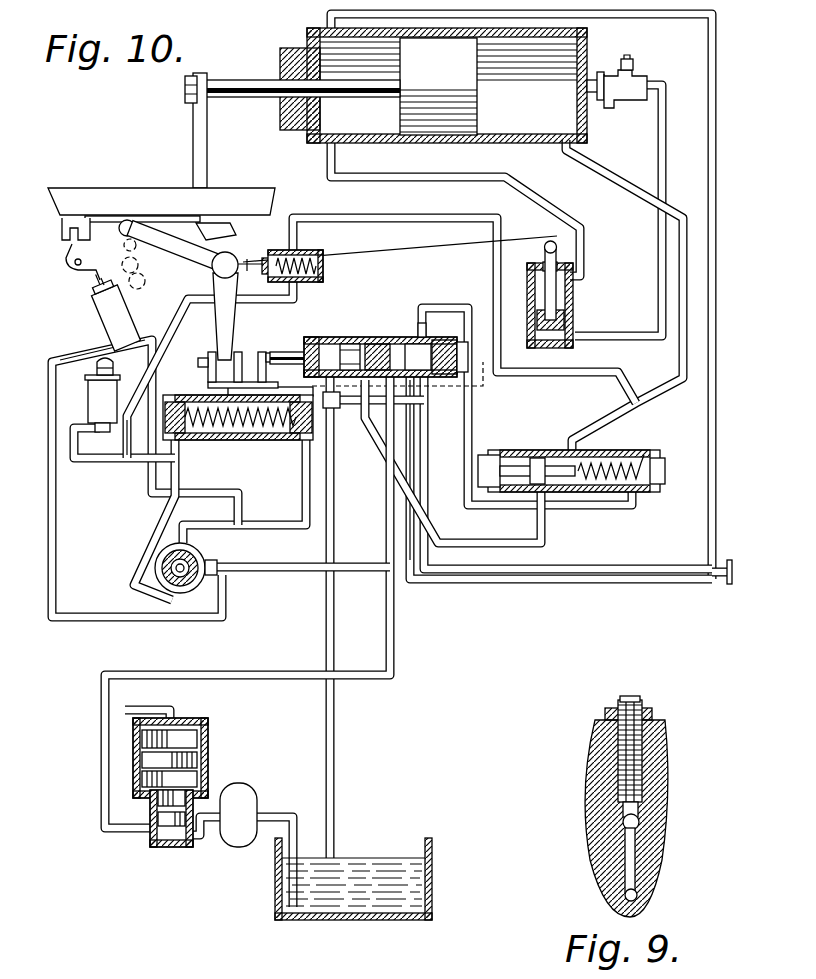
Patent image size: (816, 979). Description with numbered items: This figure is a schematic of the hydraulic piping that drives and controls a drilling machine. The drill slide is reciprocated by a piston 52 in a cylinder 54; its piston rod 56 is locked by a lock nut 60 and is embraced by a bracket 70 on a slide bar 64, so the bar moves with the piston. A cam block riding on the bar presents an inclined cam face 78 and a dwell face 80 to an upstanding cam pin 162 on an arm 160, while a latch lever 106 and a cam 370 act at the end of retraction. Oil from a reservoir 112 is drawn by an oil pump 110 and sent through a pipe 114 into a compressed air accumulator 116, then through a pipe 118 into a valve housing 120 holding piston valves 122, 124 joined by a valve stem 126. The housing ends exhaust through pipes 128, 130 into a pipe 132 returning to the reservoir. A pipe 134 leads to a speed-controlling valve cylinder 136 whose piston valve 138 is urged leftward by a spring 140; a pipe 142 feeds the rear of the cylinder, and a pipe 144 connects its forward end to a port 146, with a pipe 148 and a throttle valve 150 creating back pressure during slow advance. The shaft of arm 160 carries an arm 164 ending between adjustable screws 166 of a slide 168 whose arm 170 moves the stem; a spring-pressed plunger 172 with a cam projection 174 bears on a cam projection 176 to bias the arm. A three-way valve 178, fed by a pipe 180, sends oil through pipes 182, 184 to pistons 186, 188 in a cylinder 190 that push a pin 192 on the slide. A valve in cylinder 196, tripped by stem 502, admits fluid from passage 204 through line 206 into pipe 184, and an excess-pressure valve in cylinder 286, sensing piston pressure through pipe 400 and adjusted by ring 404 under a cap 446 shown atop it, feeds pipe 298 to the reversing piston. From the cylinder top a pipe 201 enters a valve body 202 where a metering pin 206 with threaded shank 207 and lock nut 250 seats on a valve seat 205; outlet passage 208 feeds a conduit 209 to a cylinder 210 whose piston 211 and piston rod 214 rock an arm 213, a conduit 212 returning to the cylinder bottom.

In FIG. 10, the piston 52 is at (478, 105).
In FIG. 10, the cylinder 54 is at (540, 146).
In FIG. 10, the piston rod 56 is at (236, 98).
In FIG. 10, the lock nut 60 is at (184, 90).
In FIG. 10, the slide bar 64 is at (95, 196).
In FIG. 10, the bracket 70 is at (207, 152).
In FIG. 10, the inclined cam face 78 is at (160, 217).
In FIG. 10, the dwell face 80 is at (180, 232).
In FIG. 10, the latch lever 106 is at (62, 244).
In FIG. 10, the oil pump 110 is at (242, 796).
In FIG. 10, the reservoir 112 is at (433, 870).
In FIG. 10, the pipe 114 is at (200, 840).
In FIG. 10, the compressed air accumulator 116 is at (158, 848).
In FIG. 10, the pipe 118 is at (100, 757).
In FIG. 10, the valve housing 120 is at (406, 340).
In FIG. 10, the piston valve 122 is at (428, 352).
In FIG. 10, the piston valve 124 is at (346, 346).
In FIG. 10, the valve stem 126 is at (378, 346).
In FIG. 10, the exhaust pipe 128 is at (340, 412).
In FIG. 10, the exhaust pipe 130 is at (427, 402).
In FIG. 10, the exhaust pipe 132 is at (334, 616).
In FIG. 10, the pipe 134 is at (541, 530).
In FIG. 10, the piston-speed controlling valve cylinder 136 is at (650, 492).
In FIG. 10, the piston valve 138 is at (530, 464).
In FIG. 10, the spring 140 is at (640, 466).
In FIG. 10, the pipe 142 is at (657, 393).
In FIG. 10, the pipe 144 is at (719, 105).
In FIG. 10, the port 146 is at (420, 420).
In FIG. 10, the pipe 148 is at (612, 566).
In FIG. 10, the throttle valve 150 is at (734, 568).
In FIG. 10, the arm 160 is at (196, 230).
In FIG. 10, the cam pin 162 is at (128, 220).
In FIG. 10, the arm 164 is at (230, 340).
In FIG. 10, the adjustable screws 166 is at (206, 368).
In FIG. 10, the slide 168 is at (258, 380).
In FIG. 10, the arm 170 is at (283, 352).
In FIG. 10, the spring-pressed plunger 172 is at (322, 282).
In FIG. 10, the cam projection 174 is at (272, 263).
In FIG. 10, the cam projection 176 is at (247, 270).
In FIG. 10, the three-way valve 178 is at (205, 556).
In FIG. 10, the pipe 180 is at (262, 571).
In FIG. 10, the pipe 182 is at (157, 538).
In FIG. 10, the pipe 184 is at (257, 522).
In FIG. 10, the reversing piston 186 is at (182, 442).
In FIG. 10, the piston 188 is at (270, 442).
In FIG. 10, the cylinder 190 is at (232, 442).
In FIG. 10, the pin 192 is at (232, 395).
In FIG. 10, the cylinder 196 is at (100, 312).
In FIG. 10, the pipe 201 is at (598, 76).
In FIG. 10, the valve body 202 is at (628, 98).
In FIG. 9, the valve body 202 is at (665, 777).
In FIG. 10, the passage 204 is at (83, 622).
In FIG. 9, the passage 204 is at (632, 862).
In FIG. 9, the valve seat 205 is at (641, 822).
In FIG. 10, the metering pin 206 is at (160, 376).
In FIG. 9, the metering pin 206 is at (633, 812).
In FIG. 9, the threaded shank 207 is at (640, 753).
In FIG. 9, the outlet passage 208 is at (638, 897).
In FIG. 10, the conduit 209 is at (666, 108).
In FIG. 10, the cylinder 210 is at (588, 332).
In FIG. 10, the piston 211 is at (575, 320).
In FIG. 10, the conduit 212 is at (588, 262).
In FIG. 10, the arm 213 is at (477, 248).
In FIG. 10, the piston rod 214 is at (557, 296).
In FIG. 10, the lock nut 250 is at (638, 70).
In FIG. 9, the lock nut 250 is at (648, 716).
In FIG. 10, the cylinder 286 is at (88, 405).
In FIG. 10, the pipe 298 is at (120, 465).
In FIG. 10, the cam 370 is at (70, 262).
In FIG. 10, the pipe 400 is at (130, 430).
In FIG. 10, the ring 404 is at (72, 356).
In FIG. 10, the cap 446 is at (110, 368).
In FIG. 10, the valve stem 502 is at (98, 284).